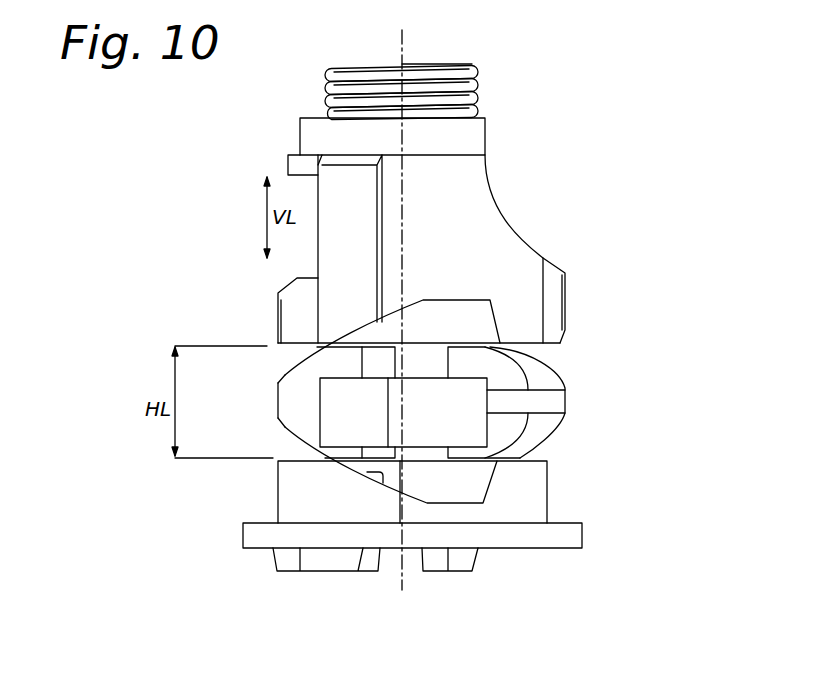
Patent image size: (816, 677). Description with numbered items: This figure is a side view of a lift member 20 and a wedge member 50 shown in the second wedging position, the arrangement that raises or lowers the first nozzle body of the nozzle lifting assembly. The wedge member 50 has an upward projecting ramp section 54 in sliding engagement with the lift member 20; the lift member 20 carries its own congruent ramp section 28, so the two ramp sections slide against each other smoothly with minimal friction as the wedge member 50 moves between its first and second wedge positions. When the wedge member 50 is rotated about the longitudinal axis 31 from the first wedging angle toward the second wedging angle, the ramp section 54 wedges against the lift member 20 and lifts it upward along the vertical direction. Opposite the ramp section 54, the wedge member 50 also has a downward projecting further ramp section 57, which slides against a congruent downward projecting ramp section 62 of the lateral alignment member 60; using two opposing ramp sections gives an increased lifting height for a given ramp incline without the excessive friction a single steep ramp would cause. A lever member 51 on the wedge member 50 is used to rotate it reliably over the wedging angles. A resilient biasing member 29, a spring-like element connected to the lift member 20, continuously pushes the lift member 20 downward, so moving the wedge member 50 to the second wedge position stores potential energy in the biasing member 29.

The lift member 20 is at (488, 167).
The ramp section 28 is at (417, 307).
The resilient biasing member 29 is at (462, 68).
The longitudinal axis 31 is at (402, 33).
The wedge member 50 is at (565, 382).
The lever member 51 is at (417, 433).
The ramp section 54 is at (290, 368).
The further ramp section 57 is at (290, 440).
The lateral alignment member 60 is at (548, 487).
The ramp section 62 is at (367, 472).